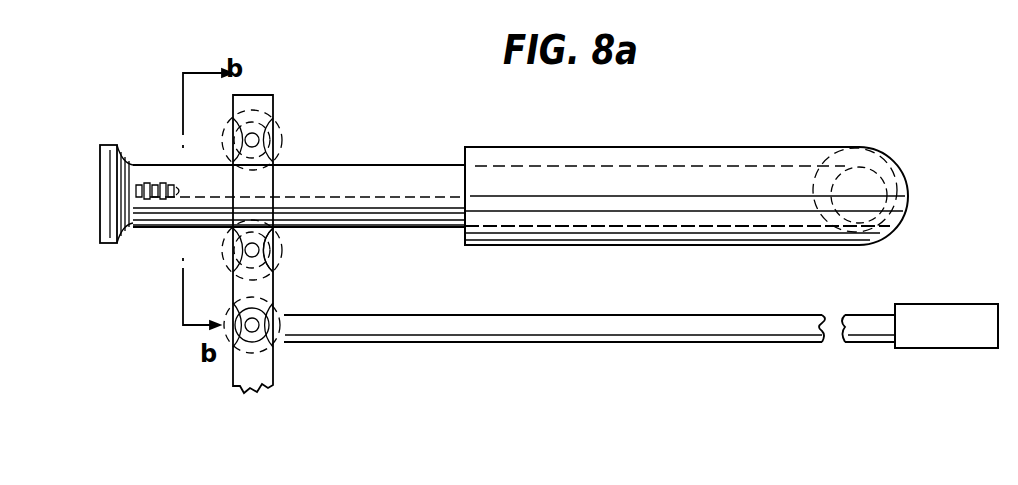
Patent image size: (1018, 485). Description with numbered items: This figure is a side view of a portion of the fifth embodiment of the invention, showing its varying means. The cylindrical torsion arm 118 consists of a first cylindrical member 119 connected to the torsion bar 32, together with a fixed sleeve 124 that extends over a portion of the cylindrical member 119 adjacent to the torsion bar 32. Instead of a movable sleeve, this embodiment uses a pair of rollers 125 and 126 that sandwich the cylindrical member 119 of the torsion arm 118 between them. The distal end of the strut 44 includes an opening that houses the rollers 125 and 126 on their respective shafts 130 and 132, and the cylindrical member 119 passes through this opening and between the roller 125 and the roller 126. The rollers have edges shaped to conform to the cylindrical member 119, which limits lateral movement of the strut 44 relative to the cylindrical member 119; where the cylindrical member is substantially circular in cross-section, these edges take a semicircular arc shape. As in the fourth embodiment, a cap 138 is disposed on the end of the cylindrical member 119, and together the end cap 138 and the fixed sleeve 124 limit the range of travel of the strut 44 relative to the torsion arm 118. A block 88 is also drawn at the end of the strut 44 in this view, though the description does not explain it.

The cap 138 is at (100, 212).
The cylindrical member 119 is at (344, 165).
The fixed sleeve 124 is at (755, 148).
The torsion bar 32 is at (880, 150).
The cylindrical torsion arm 118 is at (494, 124).
The shaft 130 is at (272, 130).
The roller 125 is at (259, 135).
The shaft 132 is at (259, 250).
The roller 126 is at (280, 262).
The strut 44 is at (274, 378).
The handle block 88 is at (942, 348).